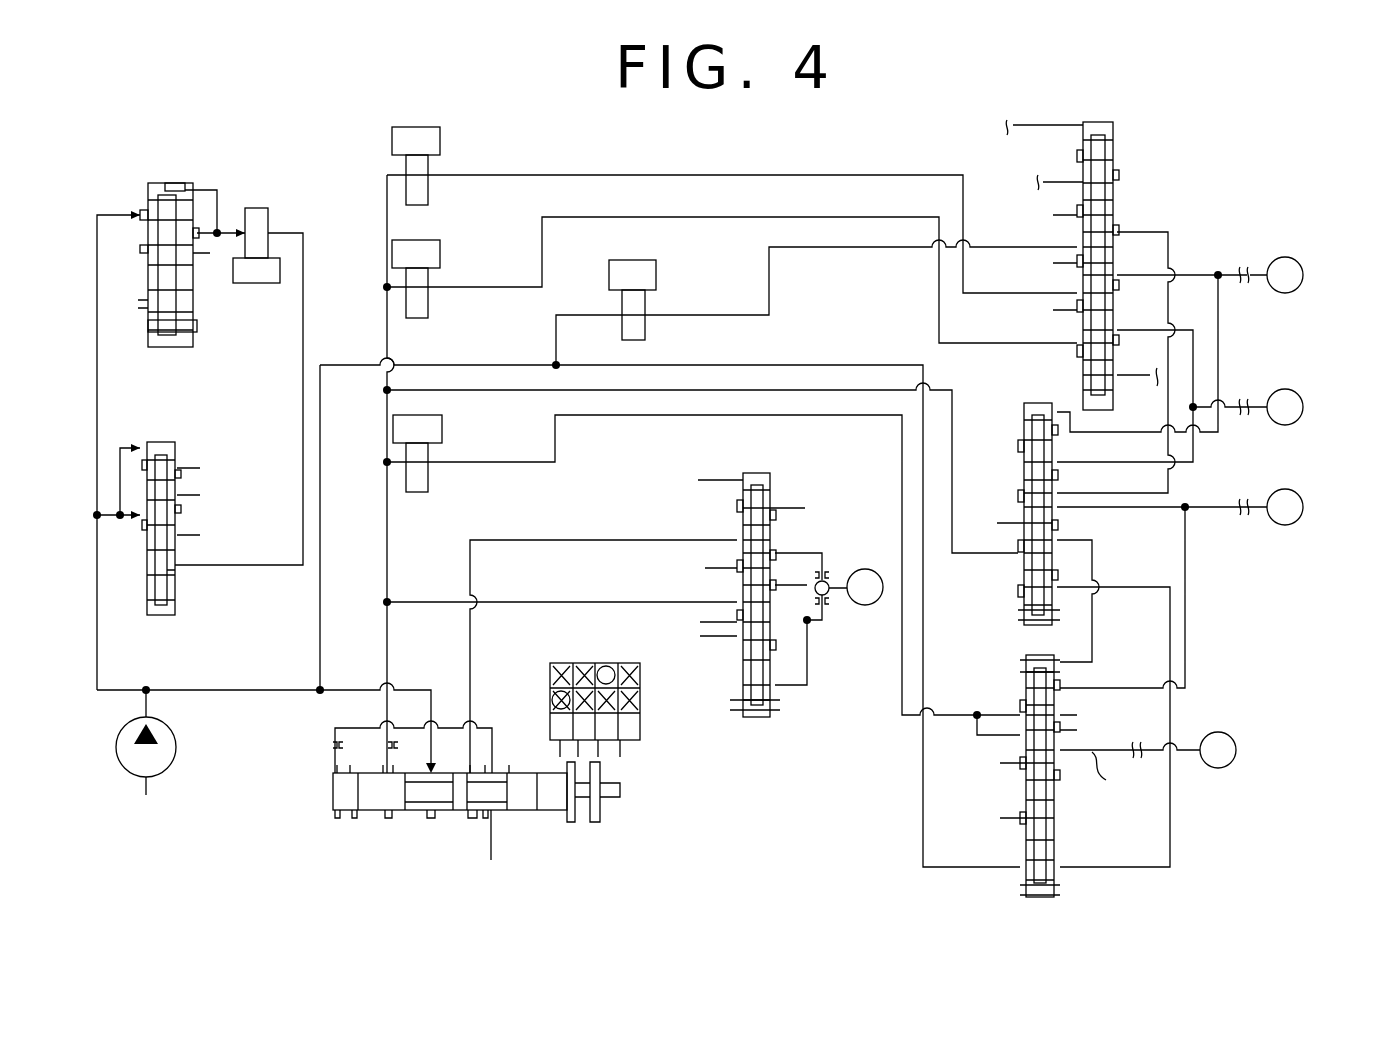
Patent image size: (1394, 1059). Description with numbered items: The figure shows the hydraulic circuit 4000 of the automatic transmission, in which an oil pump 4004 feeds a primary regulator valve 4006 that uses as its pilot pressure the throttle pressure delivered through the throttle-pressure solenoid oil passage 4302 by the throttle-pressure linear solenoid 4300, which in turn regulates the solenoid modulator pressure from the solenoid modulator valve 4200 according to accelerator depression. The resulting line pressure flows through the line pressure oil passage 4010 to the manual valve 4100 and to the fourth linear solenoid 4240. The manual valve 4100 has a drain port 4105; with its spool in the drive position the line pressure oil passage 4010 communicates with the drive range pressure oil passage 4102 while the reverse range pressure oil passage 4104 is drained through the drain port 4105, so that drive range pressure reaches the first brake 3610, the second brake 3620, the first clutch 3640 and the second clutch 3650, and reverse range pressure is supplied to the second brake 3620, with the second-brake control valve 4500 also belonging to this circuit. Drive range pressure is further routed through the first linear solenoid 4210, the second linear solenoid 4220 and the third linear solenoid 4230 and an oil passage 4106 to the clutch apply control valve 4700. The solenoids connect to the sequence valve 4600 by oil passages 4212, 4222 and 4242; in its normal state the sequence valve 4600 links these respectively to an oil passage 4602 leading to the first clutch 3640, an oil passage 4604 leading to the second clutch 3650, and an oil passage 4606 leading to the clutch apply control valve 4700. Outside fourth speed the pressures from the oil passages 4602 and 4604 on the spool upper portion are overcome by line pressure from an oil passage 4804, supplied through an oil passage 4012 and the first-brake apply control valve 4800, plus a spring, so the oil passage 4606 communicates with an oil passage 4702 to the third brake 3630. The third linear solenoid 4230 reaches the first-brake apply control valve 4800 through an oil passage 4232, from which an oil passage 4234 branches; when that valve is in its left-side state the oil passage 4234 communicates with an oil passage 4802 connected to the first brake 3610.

The hydraulic circuit 4000 is at (365, 142).
The oil pump 4004 is at (176, 747).
The primary regulator valve 4006 is at (158, 615).
The line pressure oil passage 4010 is at (470, 365).
The oil passage 4012 is at (927, 822).
The manual valve 4100 is at (323, 797).
The D range pressure oil passage 4102 is at (387, 520).
The R range pressure oil passage 4104 is at (610, 523).
The drain port 4105 is at (502, 824).
The oil passage 4106 is at (946, 390).
The solenoid modulator valve 4200 is at (165, 353).
The SL1 linear solenoid 4210 is at (442, 141).
The oil passage 4212 is at (577, 175).
The SL2 linear solenoid 4220 is at (442, 254).
The oil passage 4222 is at (577, 217).
The SL3 linear solenoid 4230 is at (443, 429).
The oil passage 4232 is at (588, 415).
The oil passage 4234 is at (980, 735).
The SL4 linear solenoid 4240 is at (657, 275).
The oil passage 4242 is at (835, 247).
The SLT linear solenoid 4300 is at (258, 283).
The SLT oil passage 4302 is at (303, 410).
The B2 control valve 4500 is at (794, 476).
The sequence valve 4600 is at (1131, 162).
The oil passage 4602 is at (1193, 275).
The oil passage 4604 is at (1195, 355).
The oil passage 4606 is at (1145, 230).
The clutch apply control valve 4700 is at (1003, 579).
The oil passage 4702 is at (1092, 567).
The B1 apply control valve 4800 is at (1006, 693).
The oil passage 4802 is at (1103, 780).
The oil passage 4804 is at (1172, 828).
The B1 brake 3610 is at (1236, 740).
The B2 brake 3620 is at (862, 605).
The B3 brake 3630 is at (1300, 500).
The C1 clutch 3640 is at (1300, 268).
The C2 clutch 3650 is at (1300, 400).